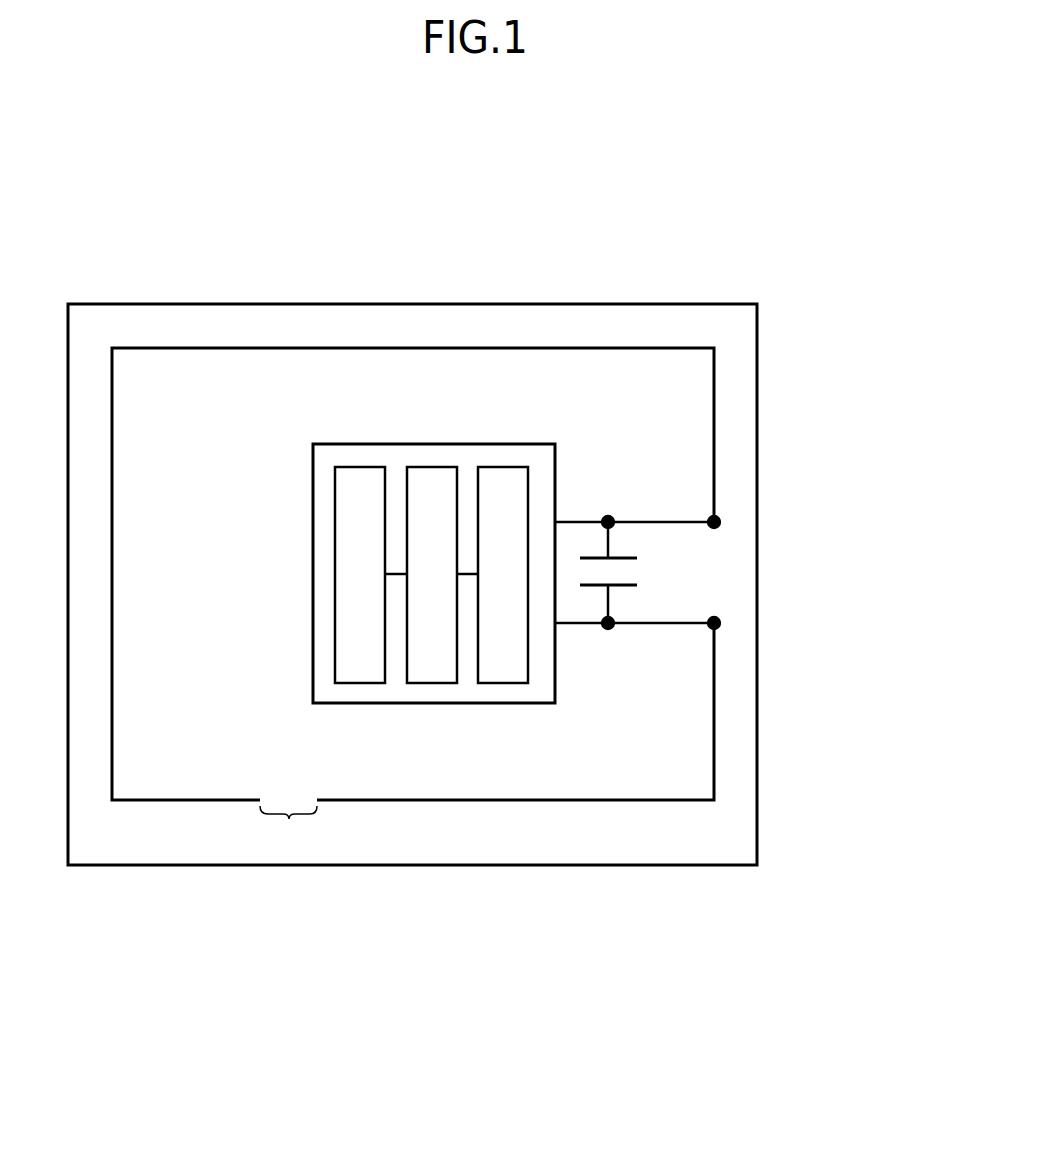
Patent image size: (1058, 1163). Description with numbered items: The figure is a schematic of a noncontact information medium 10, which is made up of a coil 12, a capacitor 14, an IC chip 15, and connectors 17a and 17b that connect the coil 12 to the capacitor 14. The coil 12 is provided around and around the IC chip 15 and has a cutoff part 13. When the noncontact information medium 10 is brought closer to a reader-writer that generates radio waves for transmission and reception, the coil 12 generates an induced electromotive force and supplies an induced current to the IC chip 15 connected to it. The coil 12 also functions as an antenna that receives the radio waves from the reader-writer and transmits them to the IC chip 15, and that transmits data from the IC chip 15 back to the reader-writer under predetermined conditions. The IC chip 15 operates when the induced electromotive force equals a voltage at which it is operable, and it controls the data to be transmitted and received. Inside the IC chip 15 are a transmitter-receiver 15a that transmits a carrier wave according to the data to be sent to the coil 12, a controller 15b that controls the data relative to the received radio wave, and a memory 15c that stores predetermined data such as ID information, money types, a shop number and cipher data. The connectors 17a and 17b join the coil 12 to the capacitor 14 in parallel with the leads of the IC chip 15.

The noncontact information medium 10 is at (738, 180).
The coil 12 is at (543, 801).
The cutoff part 13 is at (289, 819).
The capacitor 14 is at (638, 570).
The IC chip 15 is at (541, 444).
The transmitter-receiver 15a is at (500, 466).
The controller 15b is at (430, 466).
The memory 15c is at (358, 466).
The connector 17a is at (720, 518).
The connector 17b is at (716, 626).